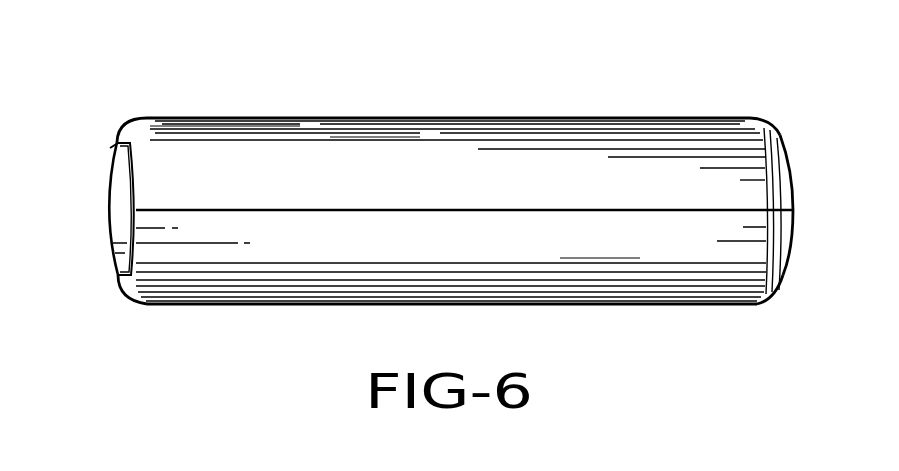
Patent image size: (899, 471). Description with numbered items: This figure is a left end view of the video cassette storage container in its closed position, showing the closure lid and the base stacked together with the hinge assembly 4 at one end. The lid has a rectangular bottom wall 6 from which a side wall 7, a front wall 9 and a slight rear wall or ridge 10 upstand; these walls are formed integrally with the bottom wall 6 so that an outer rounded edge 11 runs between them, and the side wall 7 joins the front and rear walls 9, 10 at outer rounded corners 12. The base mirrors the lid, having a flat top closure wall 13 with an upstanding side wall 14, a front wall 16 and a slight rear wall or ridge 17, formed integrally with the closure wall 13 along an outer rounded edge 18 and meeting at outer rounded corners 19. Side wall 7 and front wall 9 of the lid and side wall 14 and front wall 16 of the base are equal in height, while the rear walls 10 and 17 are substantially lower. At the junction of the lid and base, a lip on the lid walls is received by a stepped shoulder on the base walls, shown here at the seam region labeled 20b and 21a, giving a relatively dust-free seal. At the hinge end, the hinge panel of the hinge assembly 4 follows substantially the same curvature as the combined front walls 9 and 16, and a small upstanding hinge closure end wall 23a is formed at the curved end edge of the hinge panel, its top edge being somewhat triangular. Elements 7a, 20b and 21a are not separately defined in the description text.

The hinge assembly 4 is at (107, 138).
The bottom wall 6 is at (370, 305).
The side wall 7 is at (603, 250).
The end wall 7a is at (127, 268).
The front wall 9 is at (785, 272).
The rear wall 10 is at (122, 280).
The outer rounded edge 11 is at (773, 295).
The outer rounded corners 12 is at (782, 233).
The top closure wall 13 is at (315, 118).
The side wall 14 is at (377, 168).
The front wall 16 is at (782, 145).
The rear wall 17 is at (118, 141).
The outer rounded edge 18 is at (775, 128).
The outer rounded corners 19 is at (783, 185).
The seam 20b is at (477, 212).
The seam groove 21a is at (549, 213).
The hinge closure end wall 23a is at (115, 192).